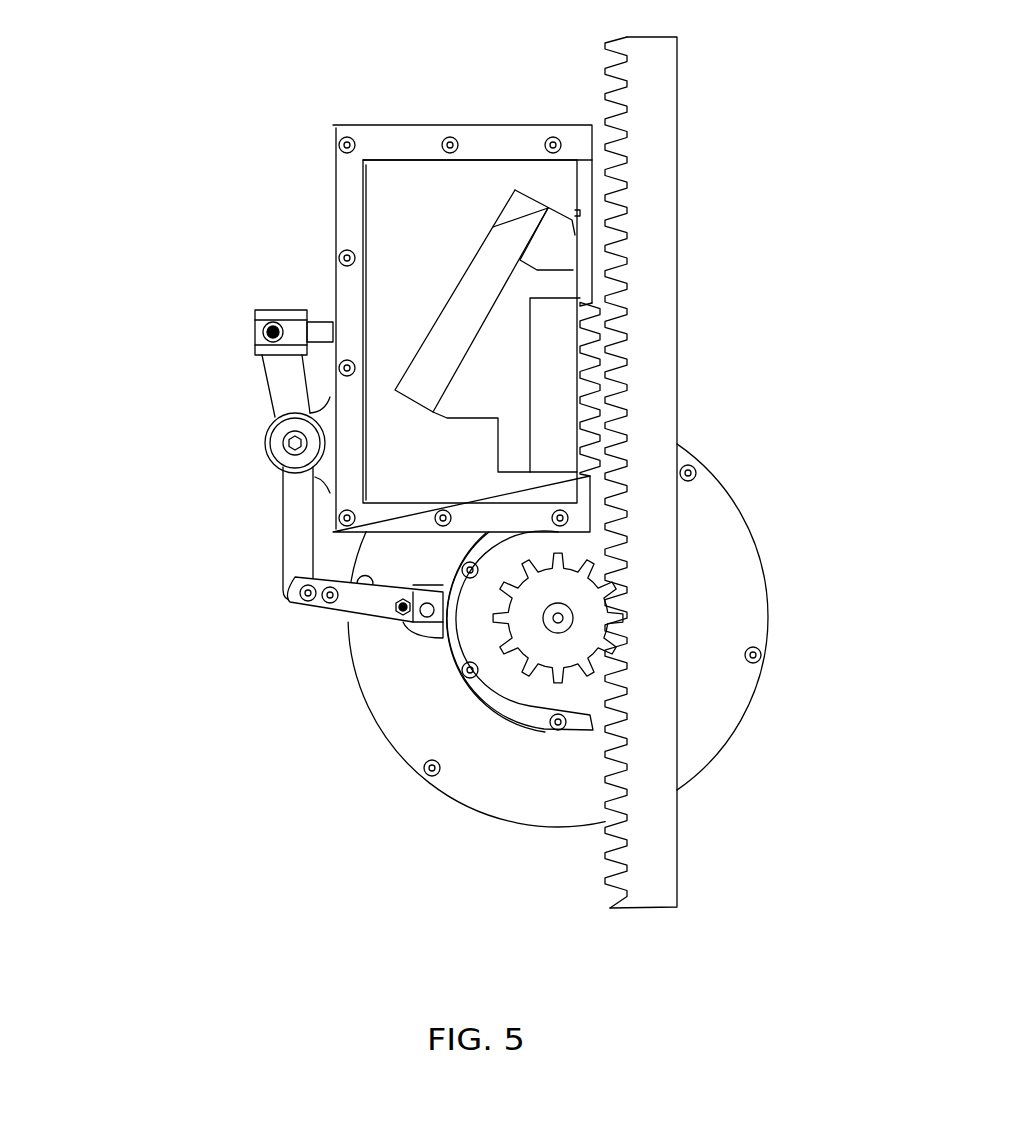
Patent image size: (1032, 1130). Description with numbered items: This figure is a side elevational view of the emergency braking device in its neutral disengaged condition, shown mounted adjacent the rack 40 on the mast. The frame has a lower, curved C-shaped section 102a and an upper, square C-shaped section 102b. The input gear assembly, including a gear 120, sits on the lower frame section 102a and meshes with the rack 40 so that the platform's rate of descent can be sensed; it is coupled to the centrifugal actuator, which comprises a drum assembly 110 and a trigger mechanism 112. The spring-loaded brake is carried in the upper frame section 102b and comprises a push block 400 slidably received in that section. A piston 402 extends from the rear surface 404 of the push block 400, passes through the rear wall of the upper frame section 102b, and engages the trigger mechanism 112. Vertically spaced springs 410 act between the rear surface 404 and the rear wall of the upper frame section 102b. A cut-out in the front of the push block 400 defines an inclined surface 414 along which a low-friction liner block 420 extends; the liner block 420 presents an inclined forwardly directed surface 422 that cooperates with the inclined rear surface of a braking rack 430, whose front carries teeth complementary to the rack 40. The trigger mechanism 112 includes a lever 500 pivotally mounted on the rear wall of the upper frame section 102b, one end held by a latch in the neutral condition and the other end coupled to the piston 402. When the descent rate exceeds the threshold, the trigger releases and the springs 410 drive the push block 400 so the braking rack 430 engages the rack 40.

The rack 40 is at (678, 82).
The push block 400 is at (417, 190).
The rear surface 404 is at (360, 172).
The springs 410 is at (363, 210).
The upper square C-shaped section 102b is at (347, 220).
The liner block 420 is at (482, 270).
The inclined surface 414 is at (493, 228).
The inclined forwardly directed surface 422 is at (463, 363).
The braking rack 430 is at (580, 345).
The piston 402 is at (320, 328).
The trigger mechanism 112 is at (238, 500).
The lever 500 is at (283, 548).
The drum assembly 110 is at (365, 710).
The gear 120 is at (583, 610).
The lower curved C-shaped section 102a is at (513, 720).